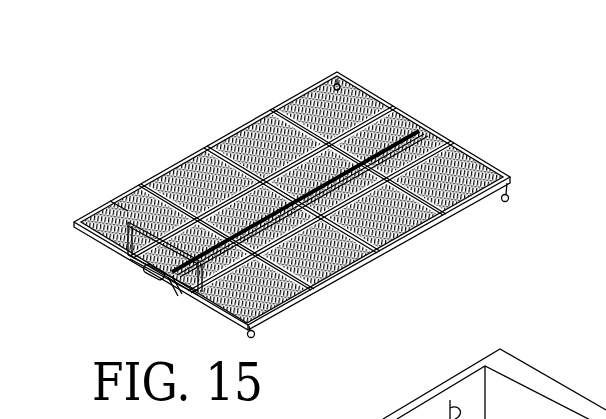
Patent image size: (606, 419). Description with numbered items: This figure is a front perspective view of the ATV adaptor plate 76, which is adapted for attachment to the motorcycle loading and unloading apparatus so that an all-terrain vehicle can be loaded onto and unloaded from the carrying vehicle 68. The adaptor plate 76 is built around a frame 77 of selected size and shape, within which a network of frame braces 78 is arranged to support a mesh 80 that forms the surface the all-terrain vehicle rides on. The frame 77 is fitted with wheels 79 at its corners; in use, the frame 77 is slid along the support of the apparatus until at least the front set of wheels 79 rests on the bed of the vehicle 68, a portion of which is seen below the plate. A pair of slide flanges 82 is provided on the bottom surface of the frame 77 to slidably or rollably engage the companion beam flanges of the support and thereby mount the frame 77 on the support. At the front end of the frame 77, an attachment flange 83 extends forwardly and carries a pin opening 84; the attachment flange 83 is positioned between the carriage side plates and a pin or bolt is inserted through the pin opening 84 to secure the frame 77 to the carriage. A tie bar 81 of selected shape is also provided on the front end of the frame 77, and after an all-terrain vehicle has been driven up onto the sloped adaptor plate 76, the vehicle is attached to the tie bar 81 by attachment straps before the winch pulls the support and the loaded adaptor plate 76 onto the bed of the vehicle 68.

The ATV adaptor plate 76 is at (250, 100).
The frame 77 is at (186, 145).
The frame braces 78 is at (382, 104).
The wheels 79 is at (340, 86).
The mesh 80 is at (125, 212).
The tie bar 81 is at (127, 252).
The slide flanges 82 is at (438, 147).
The attachment flange 83 is at (178, 288).
The pin opening 84 is at (143, 274).
The vehicle 68 is at (575, 383).